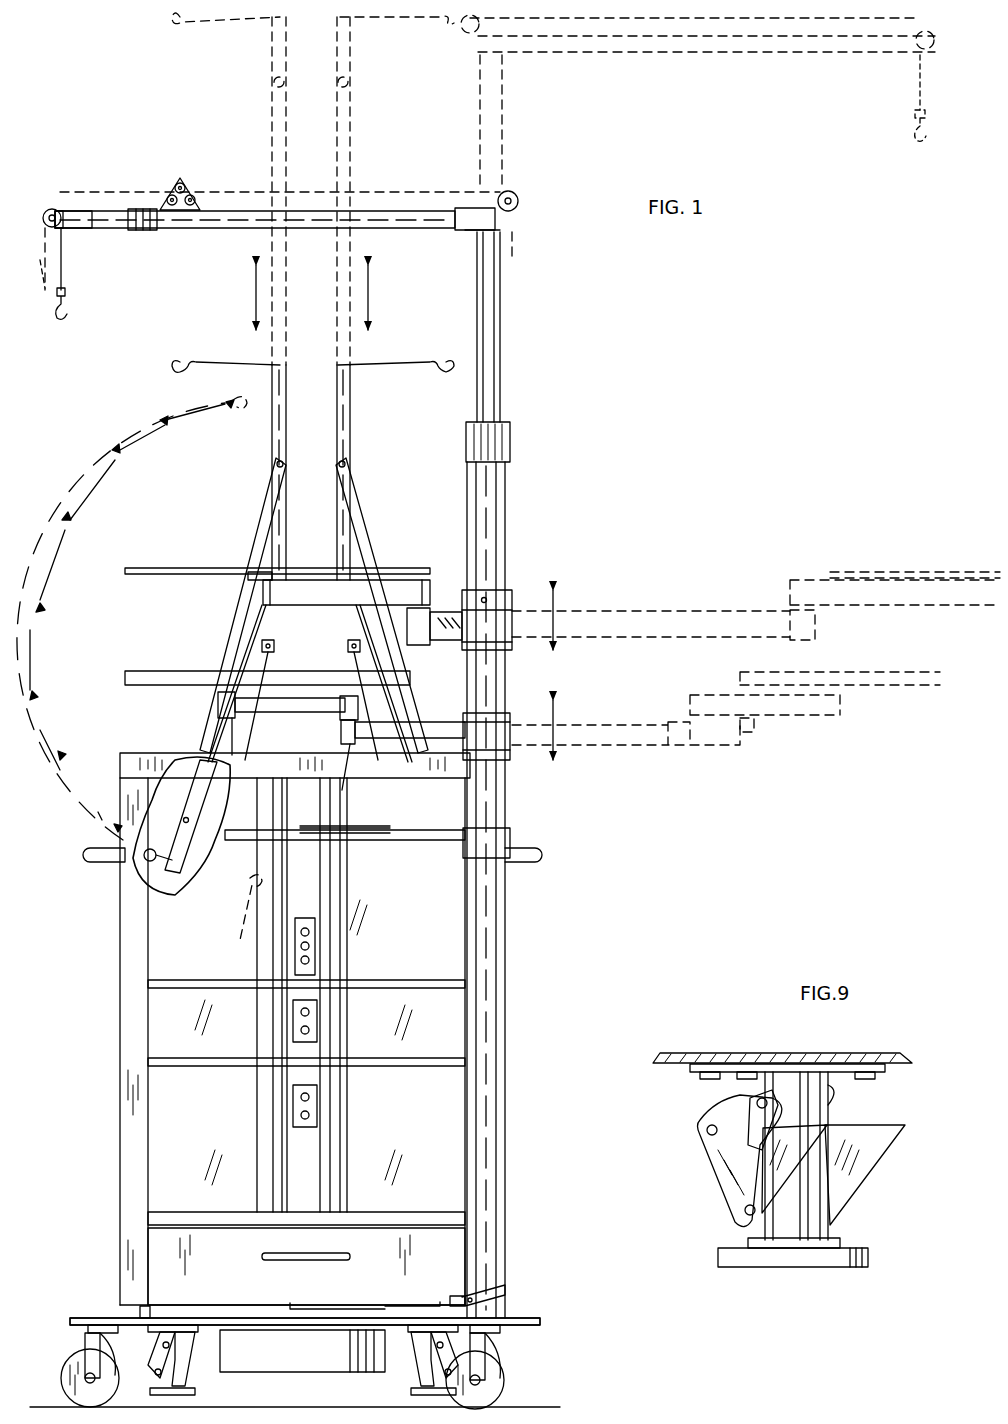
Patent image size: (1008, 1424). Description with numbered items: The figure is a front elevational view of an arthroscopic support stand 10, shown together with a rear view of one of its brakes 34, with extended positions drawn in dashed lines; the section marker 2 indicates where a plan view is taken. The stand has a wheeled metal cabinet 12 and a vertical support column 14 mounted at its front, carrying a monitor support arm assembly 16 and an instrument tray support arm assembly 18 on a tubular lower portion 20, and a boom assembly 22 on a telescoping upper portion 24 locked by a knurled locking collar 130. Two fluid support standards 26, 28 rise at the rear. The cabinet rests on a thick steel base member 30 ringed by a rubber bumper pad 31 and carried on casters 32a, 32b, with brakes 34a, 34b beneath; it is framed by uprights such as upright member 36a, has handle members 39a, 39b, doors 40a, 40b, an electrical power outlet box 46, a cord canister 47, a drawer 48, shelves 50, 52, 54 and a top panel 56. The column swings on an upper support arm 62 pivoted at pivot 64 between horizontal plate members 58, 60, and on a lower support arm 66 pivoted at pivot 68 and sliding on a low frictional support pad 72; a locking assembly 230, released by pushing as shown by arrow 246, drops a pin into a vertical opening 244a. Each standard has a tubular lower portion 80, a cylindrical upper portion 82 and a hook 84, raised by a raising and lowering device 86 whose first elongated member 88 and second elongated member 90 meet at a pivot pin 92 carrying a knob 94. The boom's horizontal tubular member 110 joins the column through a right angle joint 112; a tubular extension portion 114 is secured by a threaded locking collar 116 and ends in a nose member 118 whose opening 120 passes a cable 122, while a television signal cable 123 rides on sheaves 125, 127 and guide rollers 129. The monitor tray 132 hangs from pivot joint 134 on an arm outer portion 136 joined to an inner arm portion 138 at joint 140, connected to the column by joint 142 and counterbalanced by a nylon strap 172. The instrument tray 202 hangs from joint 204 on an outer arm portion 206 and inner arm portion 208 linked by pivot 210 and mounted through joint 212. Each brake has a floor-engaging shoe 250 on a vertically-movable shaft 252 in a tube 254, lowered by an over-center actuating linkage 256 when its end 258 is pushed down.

In FIG. 1, the arthroscopic support stand 10 is at (683, 330).
In FIG. 1, the wheeled metal cabinet 12 is at (450, 1036).
In FIG. 1, the vertical support column 14 is at (514, 552).
In FIG. 1, the support arm assembly 16 is at (392, 565).
In FIG. 1, the support arm assembly 18 is at (514, 766).
In FIG. 1, the tubular lower portion 20 is at (506, 526).
In FIG. 1, the boom assembly 22 is at (480, 238).
In FIG. 1, the telescoping upper portion 24 is at (502, 312).
In FIG. 1, the fluid support standard 26 is at (258, 508).
In FIG. 1, the fluid support standard 28 is at (353, 438).
In FIG. 1, the base member 30 is at (542, 1322).
In FIG. 9, the base member 30 is at (762, 1052).
In FIG. 1, the rubber bumper pad 31 is at (305, 1321).
In FIG. 1, the caster 32a is at (85, 1345).
In FIG. 1, the caster 32b is at (505, 1350).
In FIG. 9, the brake 34 is at (712, 1188).
In FIG. 1, the brake 34a is at (200, 1375).
In FIG. 1, the brake 34b is at (412, 1375).
In FIG. 1, the upright member 36a is at (130, 1103).
In FIG. 1, the handle member 39a is at (92, 848).
In FIG. 1, the handle member 39b is at (540, 850).
In FIG. 1, the door 40a is at (201, 1092).
In FIG. 1, the door 40b is at (389, 1042).
In FIG. 1, the electrical power outlet box 46 is at (318, 930).
In FIG. 1, the coil spring-loaded canister 47 is at (302, 1351).
In FIG. 1, the drawer 48 is at (155, 1262).
In FIG. 1, the shelf 50 is at (148, 1205).
In FIG. 1, the shelf 52 is at (145, 1050).
In FIG. 1, the shelf 54 is at (140, 970).
In FIG. 1, the top panel 56 is at (142, 752).
In FIG. 1, the horizontal plate member 58 is at (250, 841).
In FIG. 1, the horizontal plate member 60 is at (308, 842).
In FIG. 1, the upper support arm 62 is at (390, 828).
In FIG. 1, the pivot 64 is at (315, 826).
In FIG. 1, the lower support arm 66 is at (390, 1305).
In FIG. 1, the pivot 68 is at (300, 1305).
In FIG. 1, the low frictional support pad 72 is at (428, 1305).
In FIG. 1, the tubular lower portion 80 is at (350, 645).
In FIG. 1, the cylindrical upper portion 82 is at (335, 150).
In FIG. 1, the hook 84 is at (222, 22).
In FIG. 1, the raising and lowering device 86 is at (196, 650).
In FIG. 1, the first elongated member 88 is at (248, 715).
In FIG. 1, the second elongated member 90 is at (270, 118).
In FIG. 1, the pivot pin 92 is at (188, 822).
In FIG. 1, the knob 94 is at (246, 412).
In FIG. 1, the horizontal tubular member 110 is at (228, 210).
In FIG. 1, the right angle joint 112 is at (465, 232).
In FIG. 1, the tubular extension portion 114 is at (108, 210).
In FIG. 1, the threaded locking collar 116 is at (142, 230).
In FIG. 1, the nose member 118 is at (75, 210).
In FIG. 1, the opening 120 is at (64, 232).
In FIG. 1, the cable 122 is at (66, 296).
In FIG. 1, the television signal cable 123 is at (36, 282).
In FIG. 1, the second sheave 125 is at (48, 210).
In FIG. 1, the second sheave 127 is at (514, 192).
In FIG. 1, the guide rollers 129 is at (170, 188).
In FIG. 1, the locking collar 130 is at (510, 422).
In FIG. 1, the tray 132 is at (170, 568).
In FIG. 1, the pivot joint 134 is at (262, 596).
In FIG. 1, the arm outer portion 136 is at (798, 560).
In FIG. 1, the inner arm portion 138 is at (430, 610).
In FIG. 1, the joint 140 is at (440, 641).
In FIG. 1, the joint 142 is at (516, 592).
In FIG. 1, the nylon strap 172 is at (496, 500).
In FIG. 1, the instrument tray 202 is at (138, 670).
In FIG. 1, the joint 204 is at (216, 706).
In FIG. 1, the outer arm portion 206 is at (330, 705).
In FIG. 1, the inner arm portion 208 is at (440, 740).
In FIG. 1, the pivot 210 is at (345, 788).
In FIG. 1, the joint 212 is at (516, 712).
In FIG. 1, the locking assembly 230 is at (506, 1282).
In FIG. 1, the vertical opening 244a is at (135, 1305).
In FIG. 1, the arrow 246 is at (527, 1270).
In FIG. 9, the floor-engaging shoe 250 is at (818, 1267).
In FIG. 9, the vertically-movable shaft 252 is at (832, 1228).
In FIG. 9, the tube 254 is at (745, 1098).
In FIG. 9, the over-center actuating linkage 256 is at (698, 1130).
In FIG. 9, the end 258 is at (890, 1125).
In FIG. 1, the section line 2- 2 is at (165, 925).